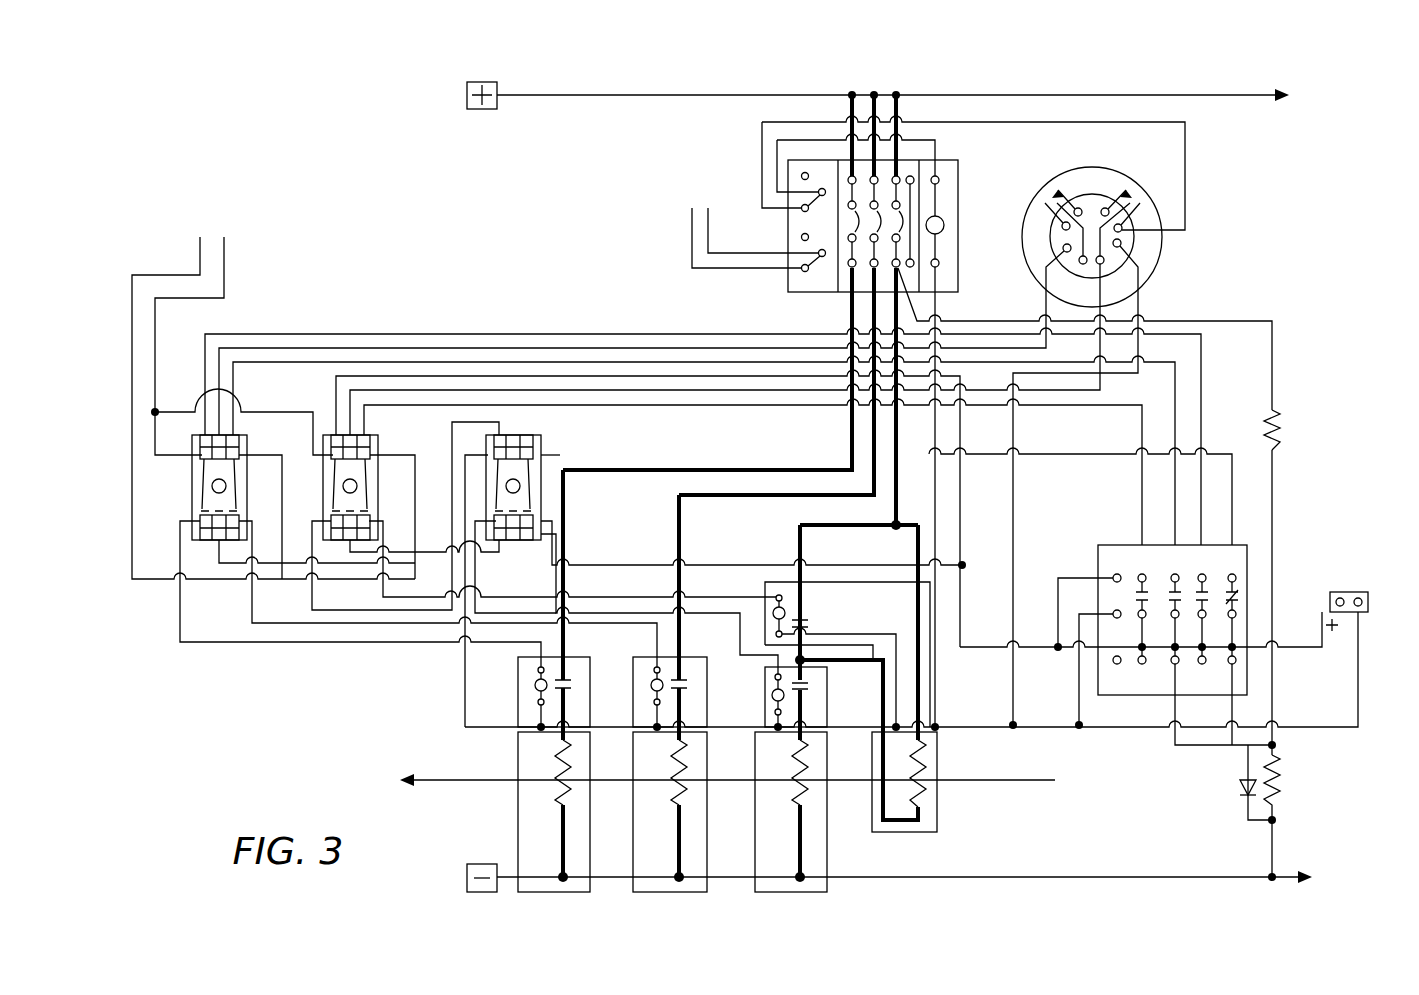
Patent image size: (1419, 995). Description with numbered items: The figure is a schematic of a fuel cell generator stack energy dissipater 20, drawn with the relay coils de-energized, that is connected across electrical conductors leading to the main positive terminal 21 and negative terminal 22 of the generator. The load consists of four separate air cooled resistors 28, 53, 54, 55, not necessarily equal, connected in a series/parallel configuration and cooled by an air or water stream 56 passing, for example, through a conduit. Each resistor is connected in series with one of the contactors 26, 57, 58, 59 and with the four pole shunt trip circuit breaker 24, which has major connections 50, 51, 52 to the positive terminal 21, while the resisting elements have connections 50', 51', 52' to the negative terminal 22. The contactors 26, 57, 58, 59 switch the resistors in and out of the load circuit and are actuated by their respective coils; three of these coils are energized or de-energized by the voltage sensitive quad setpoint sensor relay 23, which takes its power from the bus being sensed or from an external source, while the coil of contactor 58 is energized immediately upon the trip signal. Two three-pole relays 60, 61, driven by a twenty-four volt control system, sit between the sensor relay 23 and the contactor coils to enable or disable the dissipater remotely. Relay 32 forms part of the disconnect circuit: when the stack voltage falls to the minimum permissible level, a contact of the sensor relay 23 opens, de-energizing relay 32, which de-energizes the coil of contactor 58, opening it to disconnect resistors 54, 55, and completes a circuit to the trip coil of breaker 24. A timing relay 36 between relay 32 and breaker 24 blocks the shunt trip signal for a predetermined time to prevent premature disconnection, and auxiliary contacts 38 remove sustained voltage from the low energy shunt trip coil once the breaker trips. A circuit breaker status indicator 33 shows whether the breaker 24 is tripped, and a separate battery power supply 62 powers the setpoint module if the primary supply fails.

The stack energy dissipater 20 is at (194, 738).
The positive terminal 21 is at (499, 86).
The negative terminal 22 is at (480, 893).
The multi-settable point sensor relay 23 is at (1243, 553).
The shunt trip circuit breaker 24 is at (961, 153).
The contactor 26 is at (521, 703).
The resistor 28 is at (562, 800).
The relay 32 is at (541, 447).
The circuit breaker status indicator 33 is at (812, 282).
The timing relay 36 is at (1152, 270).
The auxiliary contacts 38 is at (812, 186).
The connection to positive terminal 50 is at (707, 264).
The connection to positive terminal 51 is at (777, 276).
The connection to positive terminal 52 is at (867, 294).
The connection to negative terminal 50' is at (539, 697).
The connection to negative terminal 51' is at (653, 710).
The connection to negative terminal 52' is at (827, 725).
The resistor 53 is at (678, 800).
The resistor 54 is at (799, 800).
The resistor 55 is at (921, 760).
The air or water stream 56 is at (1056, 781).
The contactor 57 is at (635, 692).
The contactor 58 is at (767, 708).
The contactor 59 is at (790, 592).
The three-pole relay 60 is at (376, 451).
The three-pole relay 61 is at (190, 467).
The battery power supply 62 is at (1362, 614).